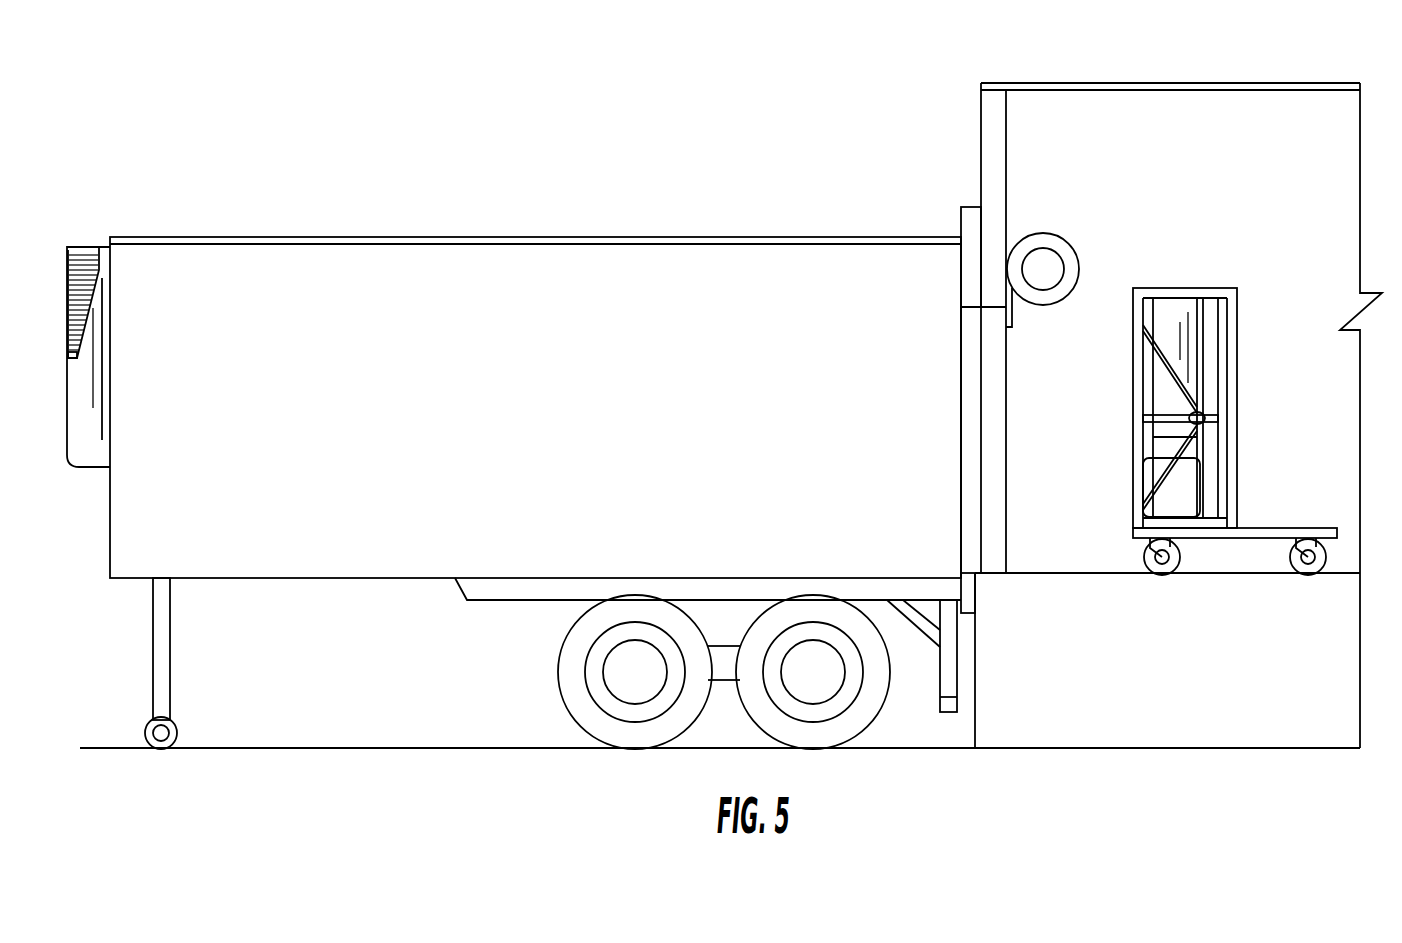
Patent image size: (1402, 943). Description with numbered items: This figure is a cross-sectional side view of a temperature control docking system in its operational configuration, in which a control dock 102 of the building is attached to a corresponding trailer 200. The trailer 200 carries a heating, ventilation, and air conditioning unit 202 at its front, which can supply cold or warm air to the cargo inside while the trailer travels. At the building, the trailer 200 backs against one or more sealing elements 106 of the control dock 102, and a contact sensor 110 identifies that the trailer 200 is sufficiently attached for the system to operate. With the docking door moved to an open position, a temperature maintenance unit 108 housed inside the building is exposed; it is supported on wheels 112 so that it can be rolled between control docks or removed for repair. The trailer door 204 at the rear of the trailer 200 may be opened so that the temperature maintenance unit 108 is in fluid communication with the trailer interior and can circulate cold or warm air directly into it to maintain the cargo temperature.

The control dock 102 is at (1053, 141).
The sealing element 106 is at (972, 228).
The temperature maintenance unit 108 is at (1255, 315).
The contact sensor 110 is at (970, 279).
The wheels 112 is at (1330, 558).
The trailer 200 is at (556, 222).
The heating, ventilation, and air conditioning unit 202 is at (88, 238).
The trailer door 204 is at (955, 455).